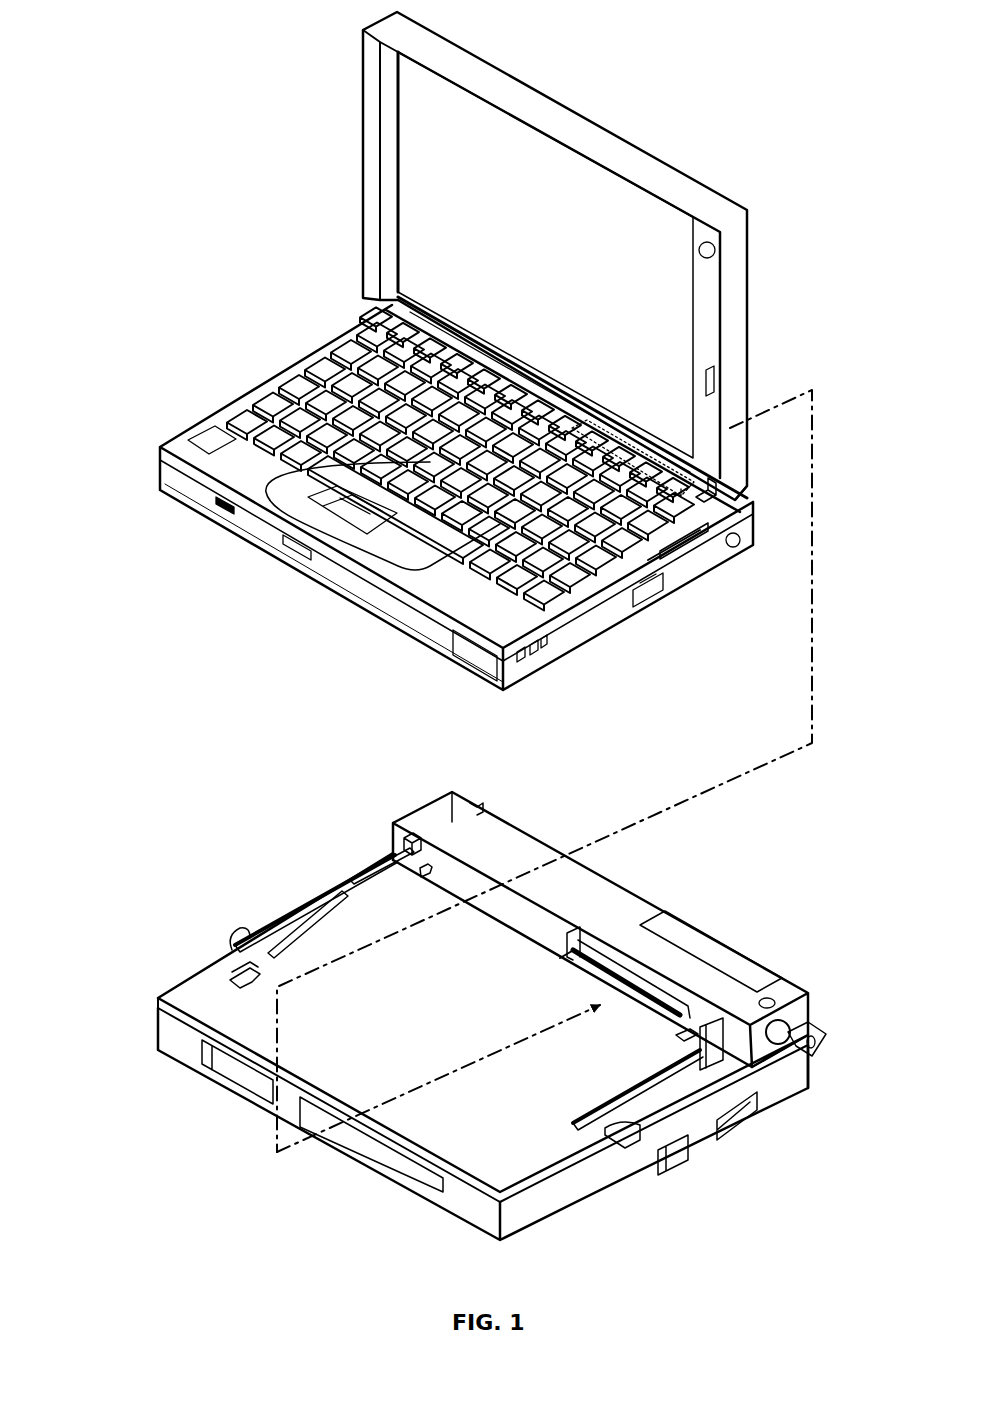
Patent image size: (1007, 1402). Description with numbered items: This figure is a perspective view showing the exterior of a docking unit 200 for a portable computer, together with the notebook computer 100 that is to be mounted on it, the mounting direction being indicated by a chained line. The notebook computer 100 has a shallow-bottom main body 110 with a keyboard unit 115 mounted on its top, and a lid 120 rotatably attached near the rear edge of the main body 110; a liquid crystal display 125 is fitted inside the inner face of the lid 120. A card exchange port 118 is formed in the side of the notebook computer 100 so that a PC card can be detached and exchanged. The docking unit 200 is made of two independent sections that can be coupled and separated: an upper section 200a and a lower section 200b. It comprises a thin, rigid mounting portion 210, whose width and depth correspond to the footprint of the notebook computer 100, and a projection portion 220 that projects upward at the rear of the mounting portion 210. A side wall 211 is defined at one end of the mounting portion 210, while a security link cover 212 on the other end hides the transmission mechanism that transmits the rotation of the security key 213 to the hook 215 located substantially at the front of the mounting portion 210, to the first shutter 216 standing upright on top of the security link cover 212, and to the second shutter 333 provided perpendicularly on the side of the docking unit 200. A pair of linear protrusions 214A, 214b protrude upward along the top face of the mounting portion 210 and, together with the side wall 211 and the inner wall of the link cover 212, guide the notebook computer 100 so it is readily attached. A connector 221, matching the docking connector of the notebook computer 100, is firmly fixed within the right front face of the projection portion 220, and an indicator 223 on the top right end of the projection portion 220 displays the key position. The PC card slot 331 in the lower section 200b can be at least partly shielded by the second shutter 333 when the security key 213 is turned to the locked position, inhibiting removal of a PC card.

The notebook computer 100 is at (236, 552).
The main body 110 is at (342, 572).
The keyboard unit 115 is at (280, 408).
The card exchange port 118 is at (690, 570).
The lid 120 is at (386, 240).
The liquid crystal display 125 is at (420, 147).
The docking unit 200 is at (228, 920).
The upper section 200a is at (160, 1004).
The lower section 200b is at (184, 1034).
The mounting portion 210 is at (200, 982).
The side wall 211 is at (288, 920).
The security link cover 212 is at (675, 1082).
The security key 213 is at (806, 1034).
The linear protrusion 214A is at (348, 892).
The linear protrusion 214b is at (620, 1112).
The hook 215 is at (258, 962).
The first shutter 216 is at (757, 1067).
The projection portion 220 is at (462, 805).
The connector 221 is at (590, 938).
The indicator 223 is at (780, 998).
The PC card slot 331 is at (720, 1122).
The second shutter 333 is at (680, 1162).